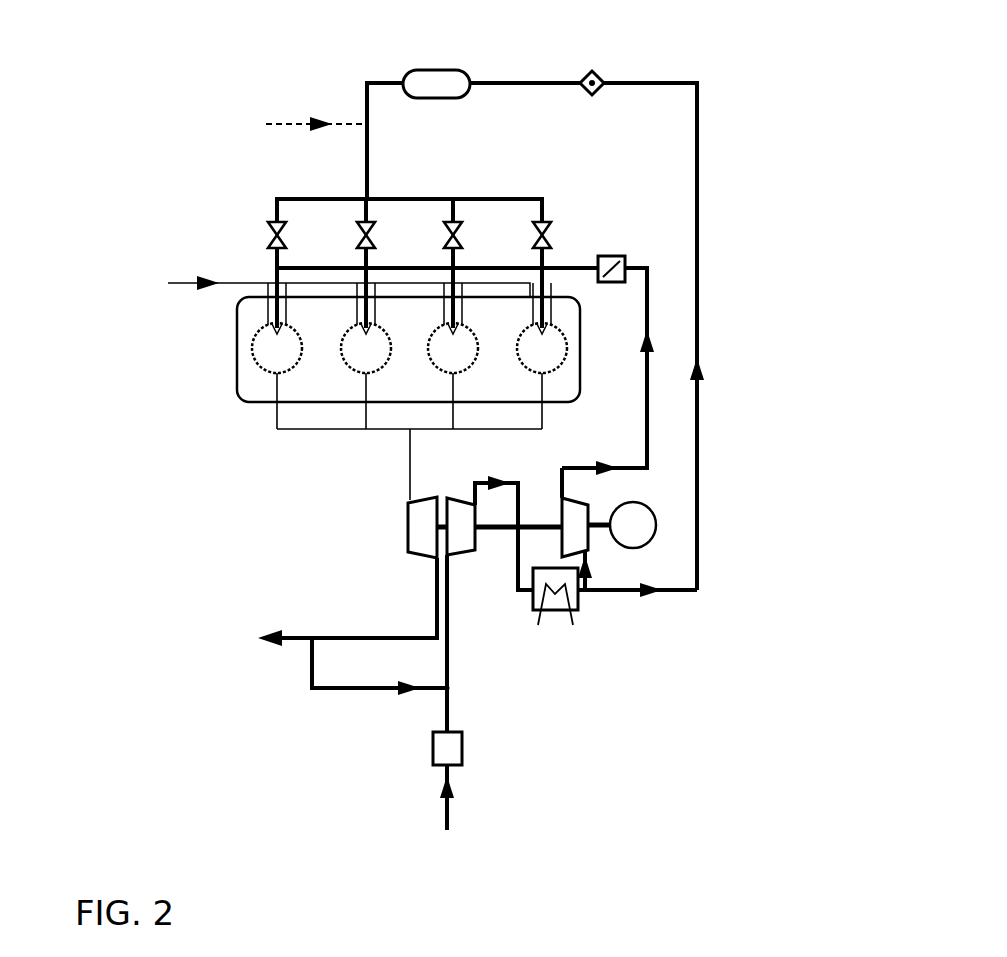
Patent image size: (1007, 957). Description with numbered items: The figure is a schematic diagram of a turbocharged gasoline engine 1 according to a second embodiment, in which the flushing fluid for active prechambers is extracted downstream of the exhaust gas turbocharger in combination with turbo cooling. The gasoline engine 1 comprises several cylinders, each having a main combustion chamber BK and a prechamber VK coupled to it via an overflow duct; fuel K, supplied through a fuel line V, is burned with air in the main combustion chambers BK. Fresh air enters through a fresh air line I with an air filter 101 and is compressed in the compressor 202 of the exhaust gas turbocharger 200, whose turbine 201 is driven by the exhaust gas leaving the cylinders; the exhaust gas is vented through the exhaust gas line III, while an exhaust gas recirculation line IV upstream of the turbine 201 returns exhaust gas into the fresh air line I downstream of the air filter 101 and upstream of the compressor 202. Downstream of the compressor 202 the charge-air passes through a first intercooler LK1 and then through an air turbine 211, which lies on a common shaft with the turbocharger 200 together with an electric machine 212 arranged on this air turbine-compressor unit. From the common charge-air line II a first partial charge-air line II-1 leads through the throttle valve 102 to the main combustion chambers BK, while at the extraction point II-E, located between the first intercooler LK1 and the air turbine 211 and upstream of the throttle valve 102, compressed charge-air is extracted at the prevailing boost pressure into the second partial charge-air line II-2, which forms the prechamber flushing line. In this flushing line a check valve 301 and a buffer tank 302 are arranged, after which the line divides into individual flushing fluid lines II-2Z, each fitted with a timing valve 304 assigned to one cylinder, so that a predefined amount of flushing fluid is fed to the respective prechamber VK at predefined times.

The gasoline engine 1 is at (185, 354).
The air filter 101 is at (452, 750).
The throttle valve 102 is at (612, 258).
The exhaust gas turbocharger 200 is at (443, 496).
The turbine 201 is at (420, 545).
The compressor 202 is at (455, 518).
The air turbine 211 is at (582, 510).
The electric machine 212 is at (640, 543).
The check valve 301 is at (592, 75).
The buffer tank 302 is at (433, 81).
The timing valves 304 is at (409, 198).
The prechamber VK is at (279, 333).
The main combustion chamber BK is at (286, 355).
The fuel K is at (340, 284).
The first intercooler LK1 is at (555, 607).
The fresh air line I is at (447, 657).
The common charge-air line II is at (518, 505).
The first partial charge-air line II-1 is at (647, 418).
The second partial charge-air line II-2 is at (696, 528).
The individual flushing fluid line II-2Z is at (358, 100).
The extraction point II-E is at (596, 612).
The exhaust gas line III is at (332, 638).
The exhaust gas recirculation line IV is at (338, 688).
The fuel line V is at (284, 122).